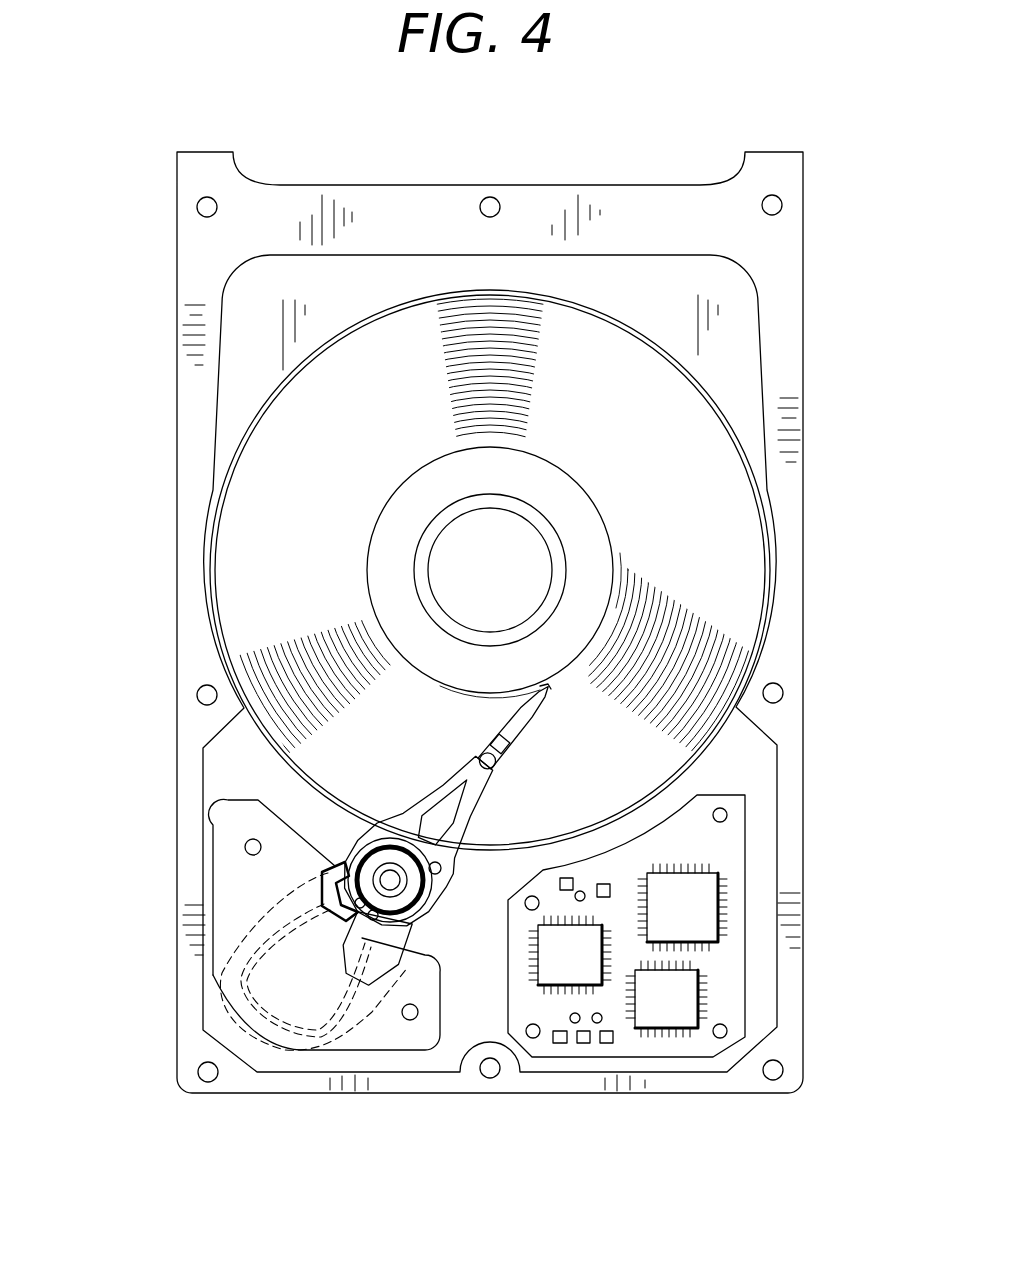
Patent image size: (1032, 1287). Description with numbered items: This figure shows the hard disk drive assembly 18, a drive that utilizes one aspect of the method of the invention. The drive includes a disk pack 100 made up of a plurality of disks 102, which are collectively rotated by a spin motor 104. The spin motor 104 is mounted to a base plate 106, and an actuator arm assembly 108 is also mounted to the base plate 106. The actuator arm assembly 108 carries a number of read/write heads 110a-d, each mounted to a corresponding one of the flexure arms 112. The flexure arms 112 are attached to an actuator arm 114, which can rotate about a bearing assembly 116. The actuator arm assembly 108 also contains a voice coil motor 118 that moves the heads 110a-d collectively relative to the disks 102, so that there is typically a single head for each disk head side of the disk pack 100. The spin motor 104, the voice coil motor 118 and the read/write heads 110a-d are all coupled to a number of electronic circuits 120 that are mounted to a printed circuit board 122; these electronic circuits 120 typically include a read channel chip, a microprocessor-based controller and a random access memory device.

The hard disk drive assembly 18 is at (780, 101).
The disk pack 100 is at (697, 389).
The disks 102 is at (665, 438).
The spin motor 104 is at (588, 532).
The base plate 106 is at (250, 300).
The actuator arm assembly 108 is at (489, 834).
The read/write heads 110a-d is at (553, 690).
The flexure arms 112 is at (488, 718).
The actuator arm 114 is at (443, 787).
The bearing assembly 116 is at (417, 887).
The voice coil motor 118 is at (327, 998).
The electronic circuits 120 is at (700, 905).
The printed circuit board 122 is at (728, 836).